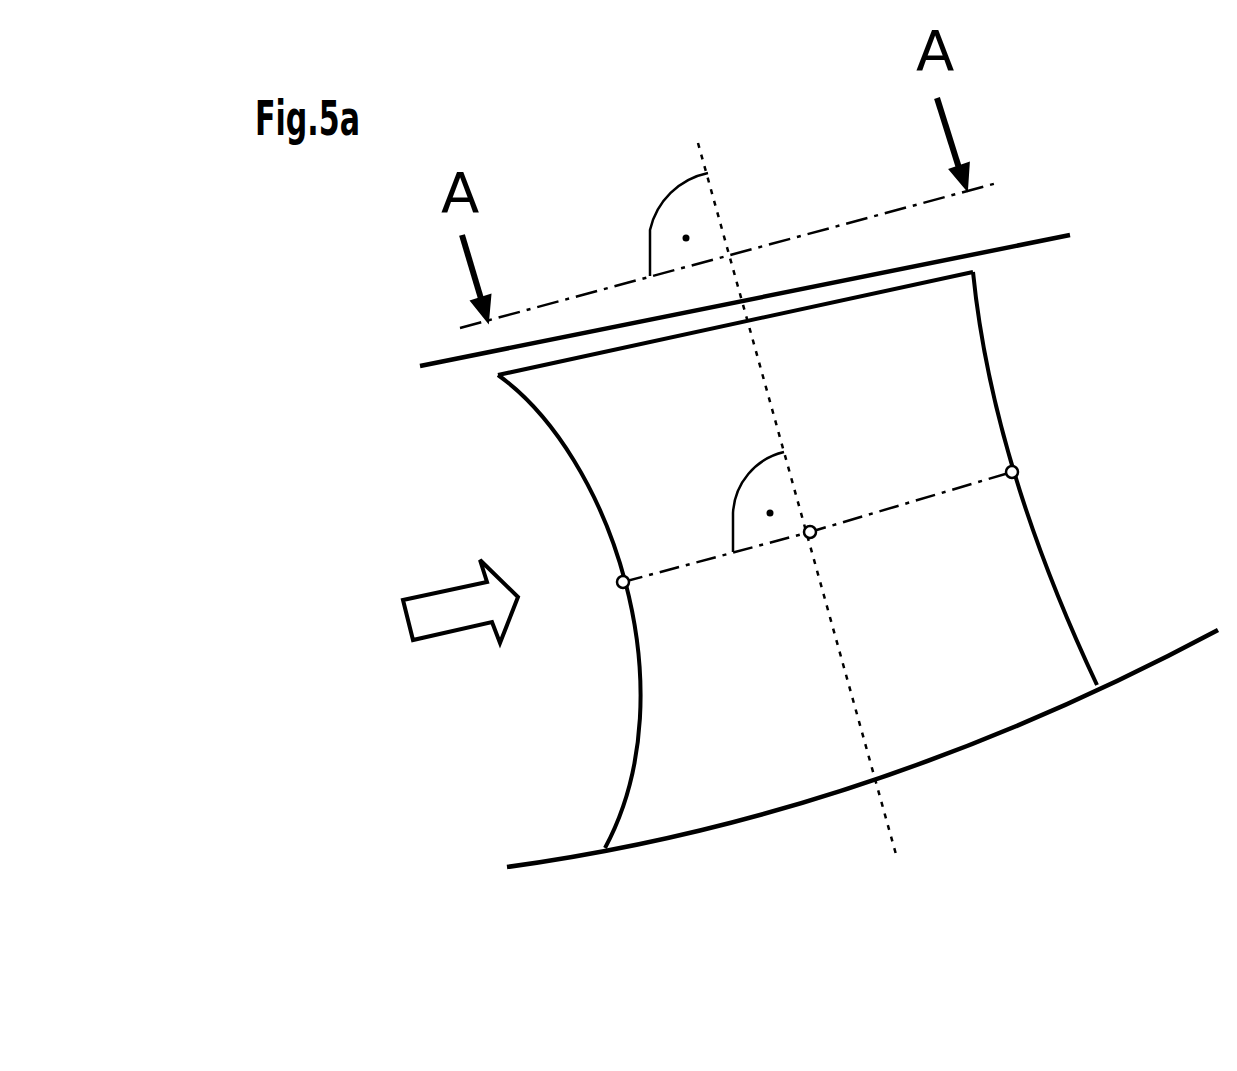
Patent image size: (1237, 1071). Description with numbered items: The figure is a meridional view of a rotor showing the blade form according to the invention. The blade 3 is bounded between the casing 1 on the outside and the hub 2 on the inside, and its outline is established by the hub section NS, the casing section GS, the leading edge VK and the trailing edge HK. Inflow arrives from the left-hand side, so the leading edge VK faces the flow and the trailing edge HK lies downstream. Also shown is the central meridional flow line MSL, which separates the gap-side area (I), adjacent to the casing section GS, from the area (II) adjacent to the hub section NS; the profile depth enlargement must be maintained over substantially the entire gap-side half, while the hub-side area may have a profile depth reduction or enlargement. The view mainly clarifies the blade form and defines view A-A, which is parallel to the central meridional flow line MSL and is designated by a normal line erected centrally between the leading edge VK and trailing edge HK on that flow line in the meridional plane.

The casing 1 is at (1038, 240).
The hub 2 is at (862, 748).
The blade 3 is at (839, 560).
The casing section GS is at (813, 308).
The hub section NS is at (983, 740).
The leading edge VK is at (628, 748).
The trailing edge HK is at (1068, 605).
The central meridional flow line MSL is at (838, 525).